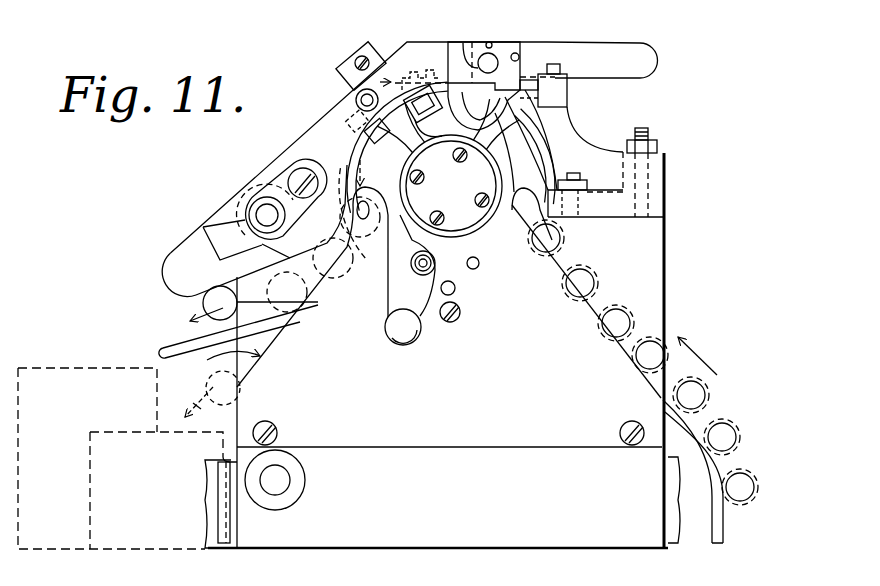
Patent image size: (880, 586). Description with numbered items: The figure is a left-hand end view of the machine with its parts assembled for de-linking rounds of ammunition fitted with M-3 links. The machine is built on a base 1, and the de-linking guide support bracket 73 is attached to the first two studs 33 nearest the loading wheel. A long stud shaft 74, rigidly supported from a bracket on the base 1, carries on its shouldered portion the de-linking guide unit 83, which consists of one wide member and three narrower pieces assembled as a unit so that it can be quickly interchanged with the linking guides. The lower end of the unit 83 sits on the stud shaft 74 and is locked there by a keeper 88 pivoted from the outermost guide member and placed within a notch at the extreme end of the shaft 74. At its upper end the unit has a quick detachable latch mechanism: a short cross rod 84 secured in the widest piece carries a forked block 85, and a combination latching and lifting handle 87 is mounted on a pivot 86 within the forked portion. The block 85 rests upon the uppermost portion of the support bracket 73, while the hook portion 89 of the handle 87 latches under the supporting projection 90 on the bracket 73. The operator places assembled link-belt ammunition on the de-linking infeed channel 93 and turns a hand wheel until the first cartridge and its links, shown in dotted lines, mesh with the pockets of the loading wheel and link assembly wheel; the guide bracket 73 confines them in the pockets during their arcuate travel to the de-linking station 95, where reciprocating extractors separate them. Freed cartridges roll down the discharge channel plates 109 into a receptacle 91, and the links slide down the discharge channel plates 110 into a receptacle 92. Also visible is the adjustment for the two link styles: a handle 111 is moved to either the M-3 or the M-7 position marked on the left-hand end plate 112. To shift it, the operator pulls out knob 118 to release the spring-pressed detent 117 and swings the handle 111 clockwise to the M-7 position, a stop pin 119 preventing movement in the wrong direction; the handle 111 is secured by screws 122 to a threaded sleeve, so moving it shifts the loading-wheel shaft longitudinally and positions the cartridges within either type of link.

The base 1 is at (621, 533).
The studs 33 is at (648, 131).
The de-linking guide support bracket 73 is at (586, 138).
The long stud shaft 74 is at (262, 206).
The de-linking guide unit 83 is at (301, 134).
The short cross rod 84 is at (480, 56).
The forked block 85 is at (495, 85).
The pivot 86 is at (510, 53).
The combination latching and lifting handle 87 is at (650, 55).
The keeper 88 is at (225, 232).
The hook portion 89 is at (567, 94).
The supporting projection 90 is at (446, 44).
The receptacle 91 is at (92, 372).
The receptacle 92 is at (127, 436).
The de-linking infeed channel 93 is at (730, 527).
The de-linking station 95 is at (341, 118).
The discharge channel plates 109 is at (182, 341).
The discharge channel plates 110 is at (206, 388).
The handle 111 is at (416, 338).
The left hand end plate 112 is at (508, 434).
The spring pressed detent 117 is at (438, 270).
The knob 118 is at (414, 281).
The stop pin 119 is at (457, 294).
The screws 122 is at (480, 203).
The M-3 link type M-3 is at (406, 263).
The M-7 link type M-7 is at (484, 263).